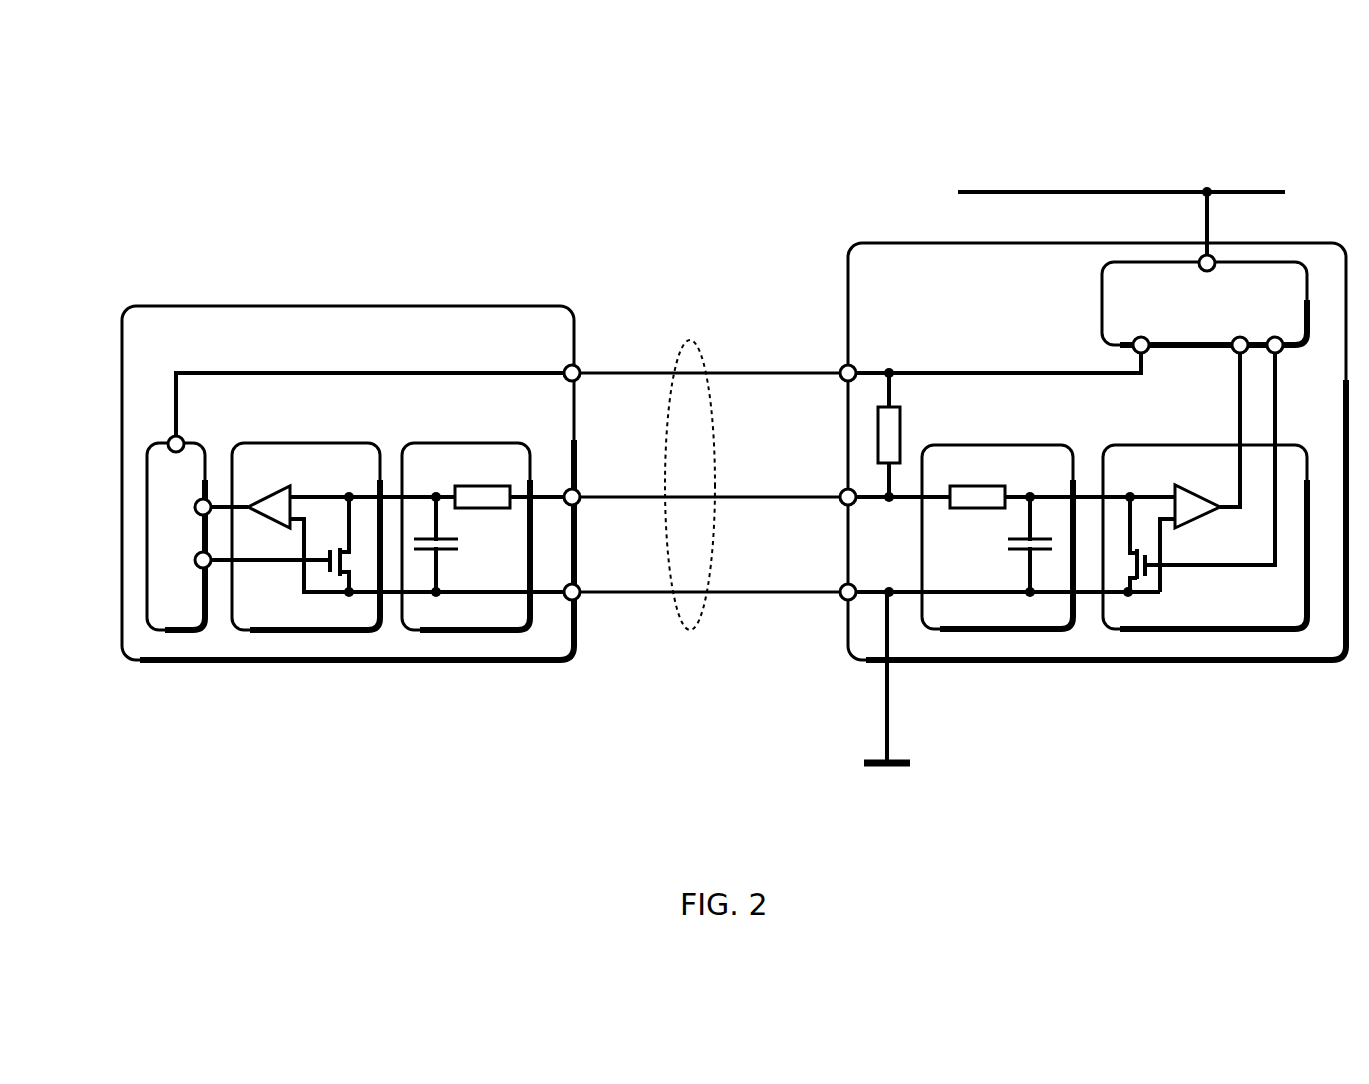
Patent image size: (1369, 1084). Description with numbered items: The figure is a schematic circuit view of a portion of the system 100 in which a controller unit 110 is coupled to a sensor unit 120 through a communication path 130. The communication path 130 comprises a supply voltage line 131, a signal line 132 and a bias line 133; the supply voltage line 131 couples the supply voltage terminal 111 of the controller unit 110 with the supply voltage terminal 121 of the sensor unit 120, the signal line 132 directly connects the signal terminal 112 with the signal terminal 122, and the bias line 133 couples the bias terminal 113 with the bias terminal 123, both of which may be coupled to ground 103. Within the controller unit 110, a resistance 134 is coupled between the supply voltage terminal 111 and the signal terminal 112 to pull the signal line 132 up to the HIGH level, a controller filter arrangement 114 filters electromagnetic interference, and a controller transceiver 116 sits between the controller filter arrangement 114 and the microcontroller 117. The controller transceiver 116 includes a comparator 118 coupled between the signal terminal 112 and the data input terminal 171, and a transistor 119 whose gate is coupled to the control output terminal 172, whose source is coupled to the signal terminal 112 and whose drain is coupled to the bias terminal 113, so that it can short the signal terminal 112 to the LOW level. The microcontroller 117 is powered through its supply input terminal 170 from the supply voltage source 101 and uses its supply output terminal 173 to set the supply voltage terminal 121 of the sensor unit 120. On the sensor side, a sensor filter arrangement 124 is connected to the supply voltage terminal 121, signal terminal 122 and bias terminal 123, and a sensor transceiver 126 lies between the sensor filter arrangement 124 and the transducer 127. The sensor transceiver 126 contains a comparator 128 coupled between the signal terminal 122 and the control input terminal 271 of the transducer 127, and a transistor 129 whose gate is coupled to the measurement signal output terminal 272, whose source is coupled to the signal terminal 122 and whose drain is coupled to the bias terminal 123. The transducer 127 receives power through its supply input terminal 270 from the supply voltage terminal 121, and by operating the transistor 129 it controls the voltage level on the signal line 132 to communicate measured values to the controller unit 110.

The system 100 is at (325, 206).
The supply voltage source 101 is at (1052, 190).
The ground 103 is at (858, 767).
The controller unit 110 is at (1097, 451).
The supply voltage terminal 111 is at (840, 368).
The signal terminal 112 is at (840, 492).
The bias terminal 113 is at (842, 602).
The controller filter arrangement 114 is at (977, 633).
The controller transceiver 116 is at (1206, 633).
The microcontroller 117 is at (1140, 262).
The comparator 118 is at (1200, 520).
The transistor 119 is at (1140, 580).
The sensor unit 120 is at (348, 483).
The supply voltage terminal 121 is at (580, 368).
The signal terminal 122 is at (580, 506).
The bias terminal 123 is at (580, 604).
The sensor filter arrangement 124 is at (428, 633).
The sensor transceiver 126 is at (279, 633).
The transducer 127 is at (176, 536).
The comparator 128 is at (280, 488).
The transistor 129 is at (330, 580).
The communication path 130 is at (688, 636).
The supply voltage line 131 is at (620, 378).
The signal line 132 is at (790, 500).
The bias line 133 is at (616, 596).
The resistance 134 is at (902, 434).
The supply input terminal 170 is at (1220, 256).
The data input terminal 171 is at (1232, 356).
The control output terminal 172 is at (1278, 356).
The supply output terminal 173 is at (1133, 346).
The supply input terminal 270 is at (170, 440).
The control input terminal 271 is at (212, 490).
The measurement signal output terminal 272 is at (205, 568).